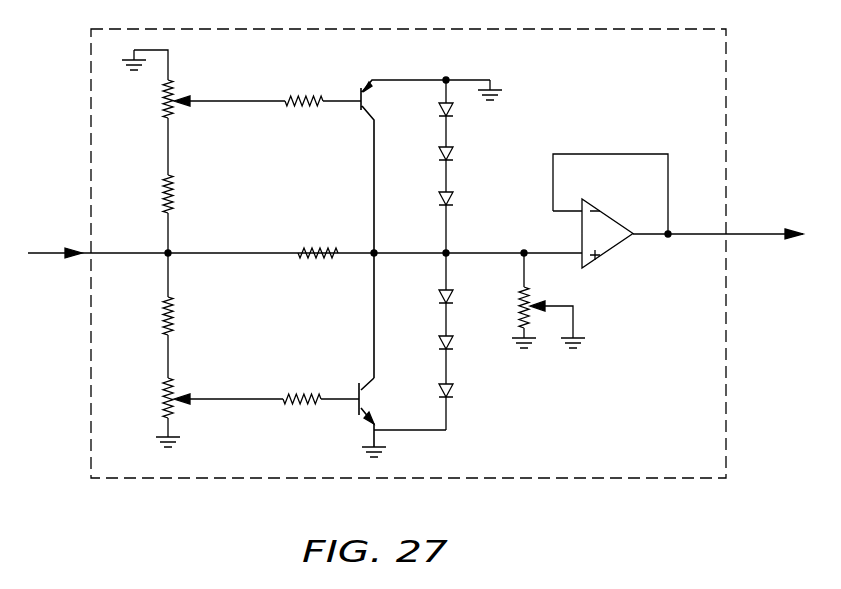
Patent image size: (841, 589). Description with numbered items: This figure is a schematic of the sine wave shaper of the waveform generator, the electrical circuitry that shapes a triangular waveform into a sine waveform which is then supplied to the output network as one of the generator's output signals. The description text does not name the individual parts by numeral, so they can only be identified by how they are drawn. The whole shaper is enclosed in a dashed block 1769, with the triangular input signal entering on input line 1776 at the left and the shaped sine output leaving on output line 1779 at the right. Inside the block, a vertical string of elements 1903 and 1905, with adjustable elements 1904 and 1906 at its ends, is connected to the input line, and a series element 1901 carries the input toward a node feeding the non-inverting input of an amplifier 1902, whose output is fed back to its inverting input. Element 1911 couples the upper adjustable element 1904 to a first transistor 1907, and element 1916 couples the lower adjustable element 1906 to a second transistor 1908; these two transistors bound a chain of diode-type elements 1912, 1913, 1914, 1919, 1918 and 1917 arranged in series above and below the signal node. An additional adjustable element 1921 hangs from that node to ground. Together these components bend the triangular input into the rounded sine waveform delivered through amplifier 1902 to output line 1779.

The circuit enclosure (dashed block) 1769 is at (726, 118).
The input signal line 1776 is at (37, 250).
The output signal line 1779 is at (752, 236).
The series resistor 1901 is at (312, 248).
The operational amplifier 1902 is at (605, 255).
The resistor 1903 is at (160, 200).
The potentiometer 1904 is at (160, 110).
The resistor 1905 is at (160, 320).
The potentiometer 1906 is at (162, 390).
The PNP transistor 1907 is at (356, 118).
The NPN transistor 1908 is at (355, 405).
The base resistor 1911 is at (300, 96).
The diode 1912 is at (438, 105).
The diode 1913 is at (455, 152).
The diode 1914 is at (455, 197).
The base resistor 1916 is at (298, 393).
The diode 1917 is at (455, 391).
The diode 1918 is at (455, 343).
The diode 1919 is at (453, 297).
The potentiometer 1921 is at (516, 308).